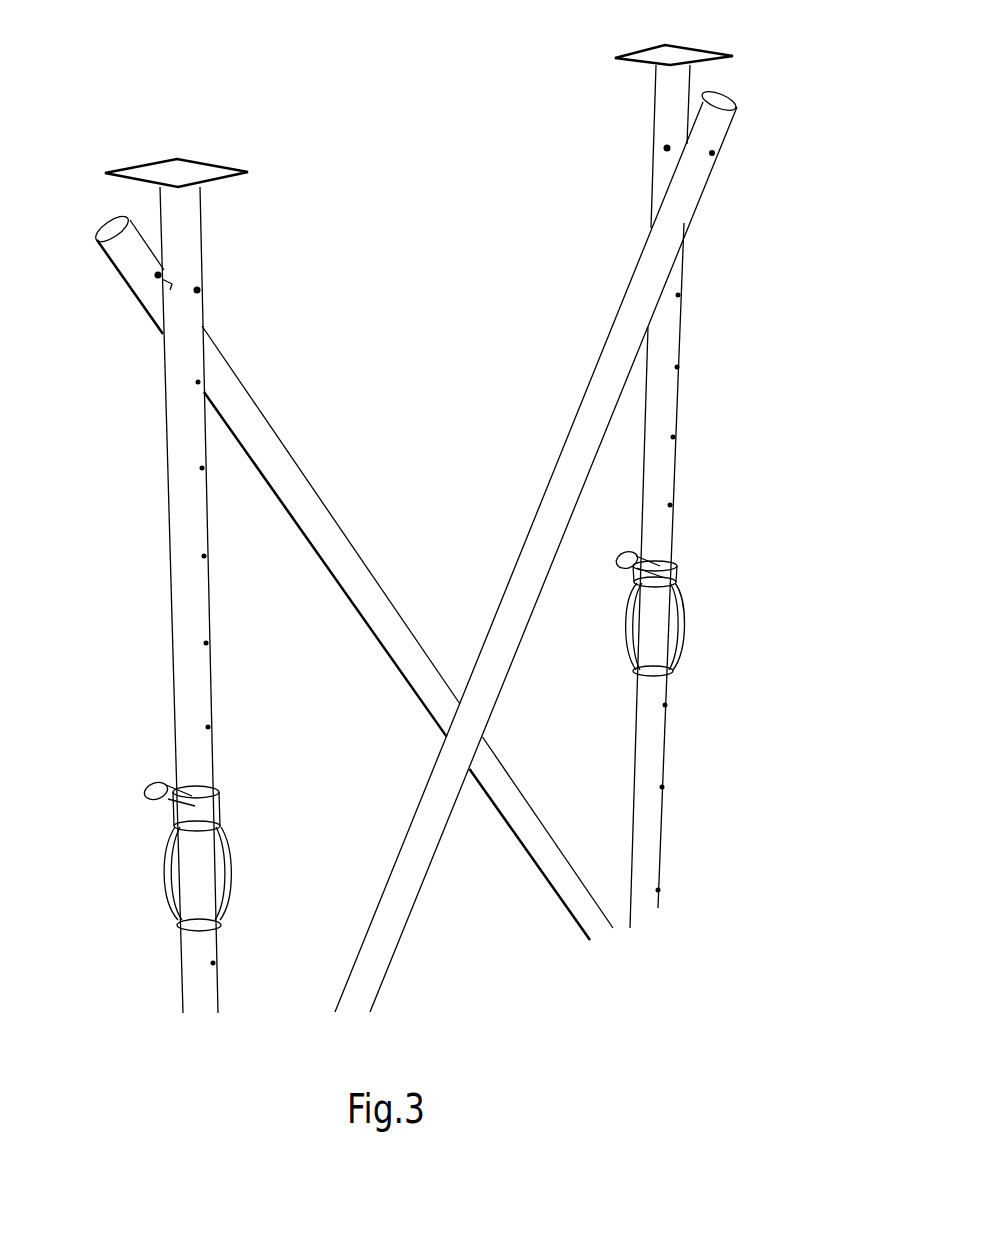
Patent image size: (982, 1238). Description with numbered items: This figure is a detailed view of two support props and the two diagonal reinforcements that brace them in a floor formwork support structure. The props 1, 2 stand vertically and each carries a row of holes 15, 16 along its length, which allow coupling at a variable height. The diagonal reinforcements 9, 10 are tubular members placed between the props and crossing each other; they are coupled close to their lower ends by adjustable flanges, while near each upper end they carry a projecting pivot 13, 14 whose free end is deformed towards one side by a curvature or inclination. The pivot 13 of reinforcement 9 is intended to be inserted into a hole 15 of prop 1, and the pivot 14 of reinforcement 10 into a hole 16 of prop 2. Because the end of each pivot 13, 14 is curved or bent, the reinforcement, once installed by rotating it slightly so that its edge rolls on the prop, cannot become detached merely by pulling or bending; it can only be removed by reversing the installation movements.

The support prop 1 is at (210, 672).
The support prop 2 is at (675, 347).
The diagonal reinforcement 9 is at (287, 457).
The diagonal reinforcement 10 is at (498, 662).
The pivot 13 is at (158, 275).
The pivot 14 is at (680, 163).
The hole 15 is at (197, 290).
The hole 16 is at (667, 148).